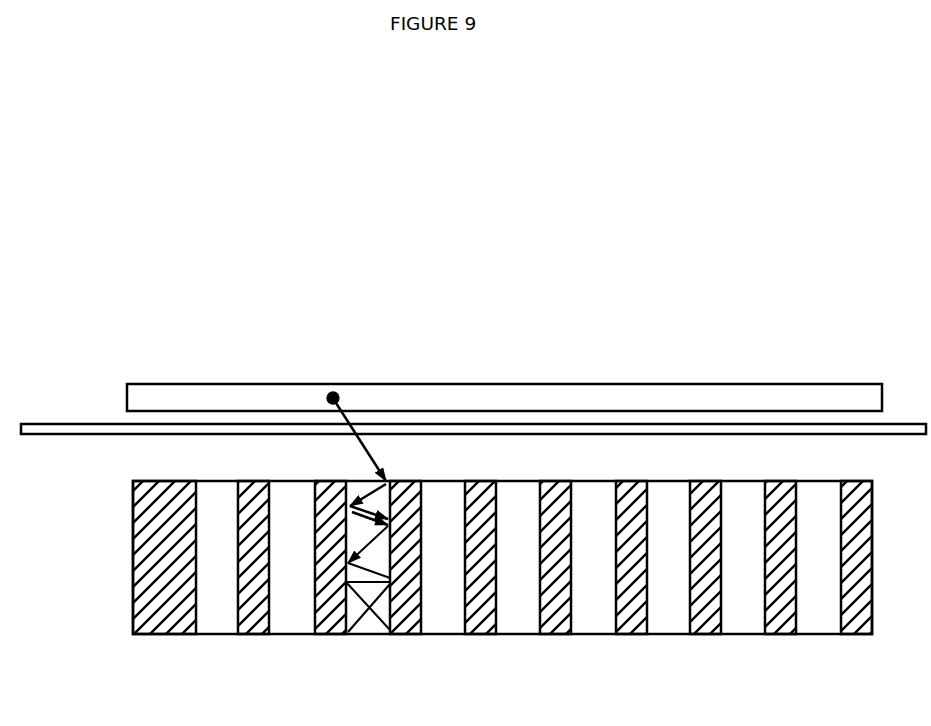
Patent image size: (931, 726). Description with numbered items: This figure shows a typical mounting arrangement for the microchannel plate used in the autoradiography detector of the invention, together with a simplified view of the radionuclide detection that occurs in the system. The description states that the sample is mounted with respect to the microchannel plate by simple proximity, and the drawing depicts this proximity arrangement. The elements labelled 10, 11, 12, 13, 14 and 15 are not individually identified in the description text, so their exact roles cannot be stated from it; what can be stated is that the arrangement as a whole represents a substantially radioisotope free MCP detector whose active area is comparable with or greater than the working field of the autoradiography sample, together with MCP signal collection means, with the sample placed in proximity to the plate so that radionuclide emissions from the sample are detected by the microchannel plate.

The substrate plate 10 is at (87, 424).
The upper plate 11 is at (255, 384).
The light source point 12 is at (327, 398).
The incident light ray 13 is at (385, 481).
The reflected light rays in groove 14 is at (352, 500).
The grating structure 15 is at (521, 635).